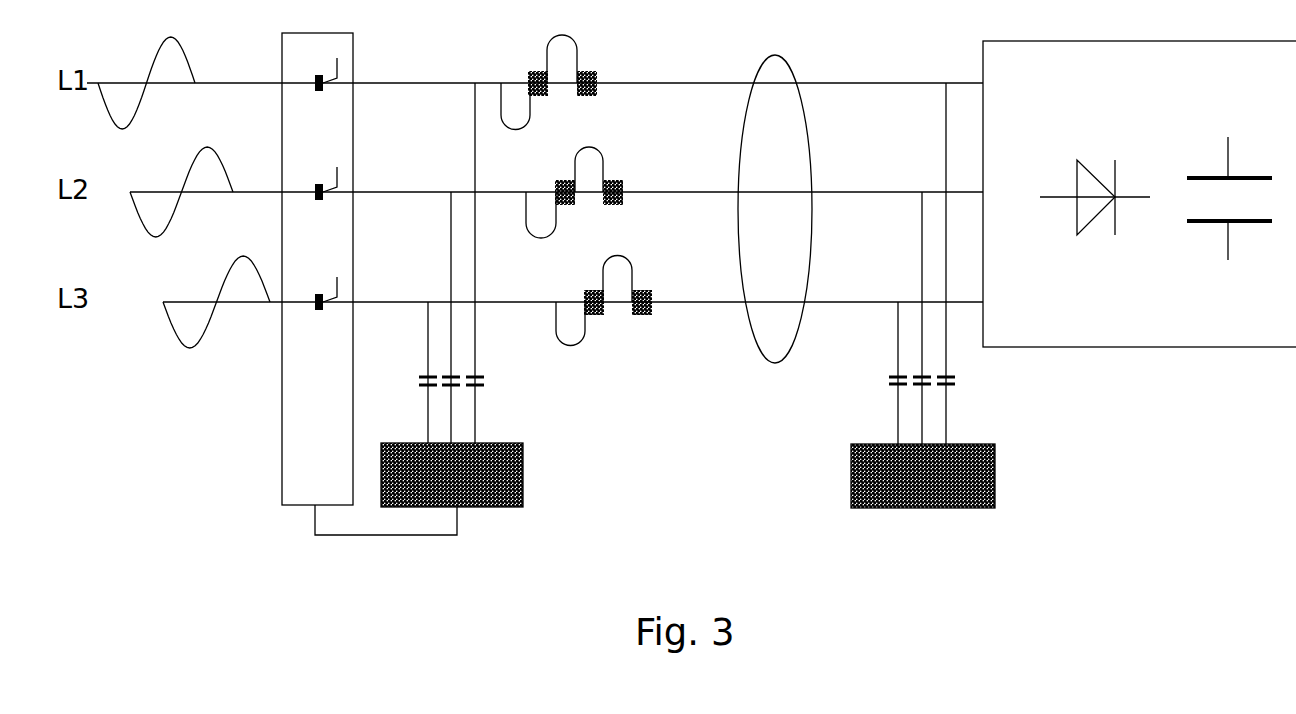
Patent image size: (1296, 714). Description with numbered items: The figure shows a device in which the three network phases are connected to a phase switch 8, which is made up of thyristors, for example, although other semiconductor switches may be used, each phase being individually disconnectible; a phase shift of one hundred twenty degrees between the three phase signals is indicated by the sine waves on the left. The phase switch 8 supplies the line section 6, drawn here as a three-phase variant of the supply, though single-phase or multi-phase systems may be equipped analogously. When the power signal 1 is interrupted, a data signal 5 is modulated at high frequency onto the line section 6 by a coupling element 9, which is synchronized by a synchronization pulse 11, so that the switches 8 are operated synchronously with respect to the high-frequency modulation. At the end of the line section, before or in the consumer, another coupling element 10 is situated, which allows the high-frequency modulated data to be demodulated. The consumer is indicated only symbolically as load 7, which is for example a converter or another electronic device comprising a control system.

The power signal 1 is at (508, 83).
The data signal 5 is at (593, 75).
The line section 6 is at (775, 209).
The load 7 is at (1139, 194).
The phase switch 8 is at (317, 269).
The coupling element 9 is at (452, 295).
The coupling element 10 is at (923, 295).
The synchronization pulse 11 is at (386, 538).